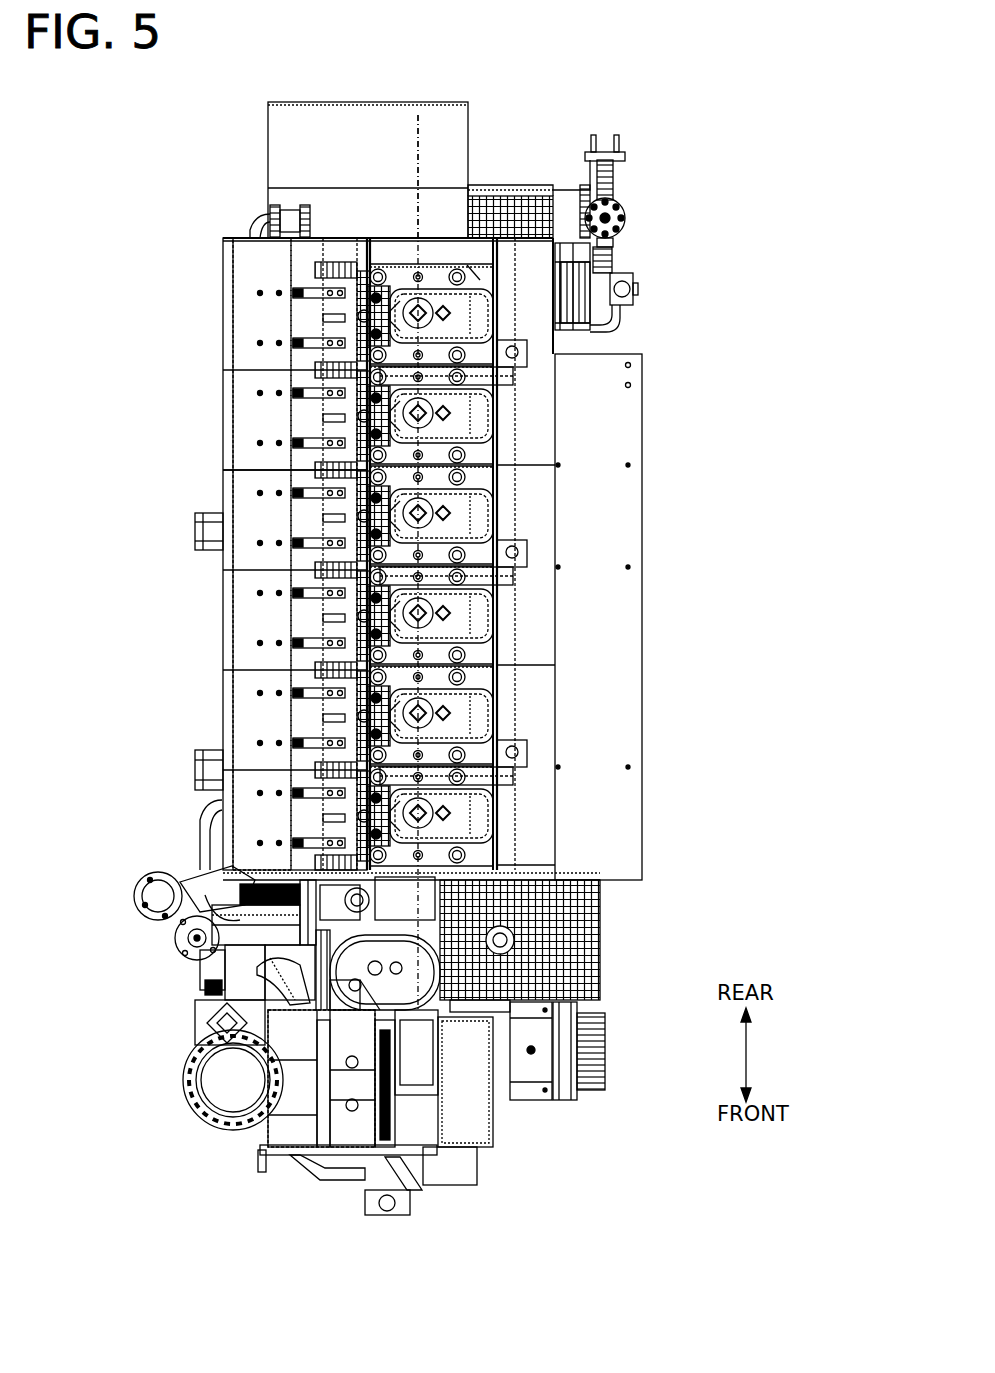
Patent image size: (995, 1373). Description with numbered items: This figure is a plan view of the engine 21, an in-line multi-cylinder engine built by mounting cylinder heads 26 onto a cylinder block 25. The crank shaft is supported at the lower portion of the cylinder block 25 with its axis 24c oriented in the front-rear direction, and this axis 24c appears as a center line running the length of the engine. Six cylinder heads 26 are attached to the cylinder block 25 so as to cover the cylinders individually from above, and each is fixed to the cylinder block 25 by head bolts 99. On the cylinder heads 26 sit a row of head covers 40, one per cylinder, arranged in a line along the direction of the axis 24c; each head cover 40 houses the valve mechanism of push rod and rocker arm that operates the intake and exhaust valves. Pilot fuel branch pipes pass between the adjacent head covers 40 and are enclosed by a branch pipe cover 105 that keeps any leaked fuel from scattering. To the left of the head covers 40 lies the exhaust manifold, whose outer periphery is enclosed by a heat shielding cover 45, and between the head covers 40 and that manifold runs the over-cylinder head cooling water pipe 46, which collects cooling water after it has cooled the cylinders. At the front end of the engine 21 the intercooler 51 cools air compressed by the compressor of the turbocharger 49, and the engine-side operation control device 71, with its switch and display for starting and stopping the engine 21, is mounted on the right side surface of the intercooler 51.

The engine 21 is at (737, 160).
The axis 24c is at (430, 145).
The cylinder block 25 is at (338, 238).
The cylinder heads 26 is at (572, 250).
The head covers 40 is at (628, 308).
The heat shielding cover 45 is at (240, 410).
The over-cylinder head cooling water pipe 46 is at (300, 480).
The turbocharger 49 is at (265, 1152).
The intercooler 51 is at (335, 1176).
The engine-side operation control device 71 is at (533, 1100).
The head bolts 99 is at (400, 280).
The branch pipe cover 105 is at (520, 375).